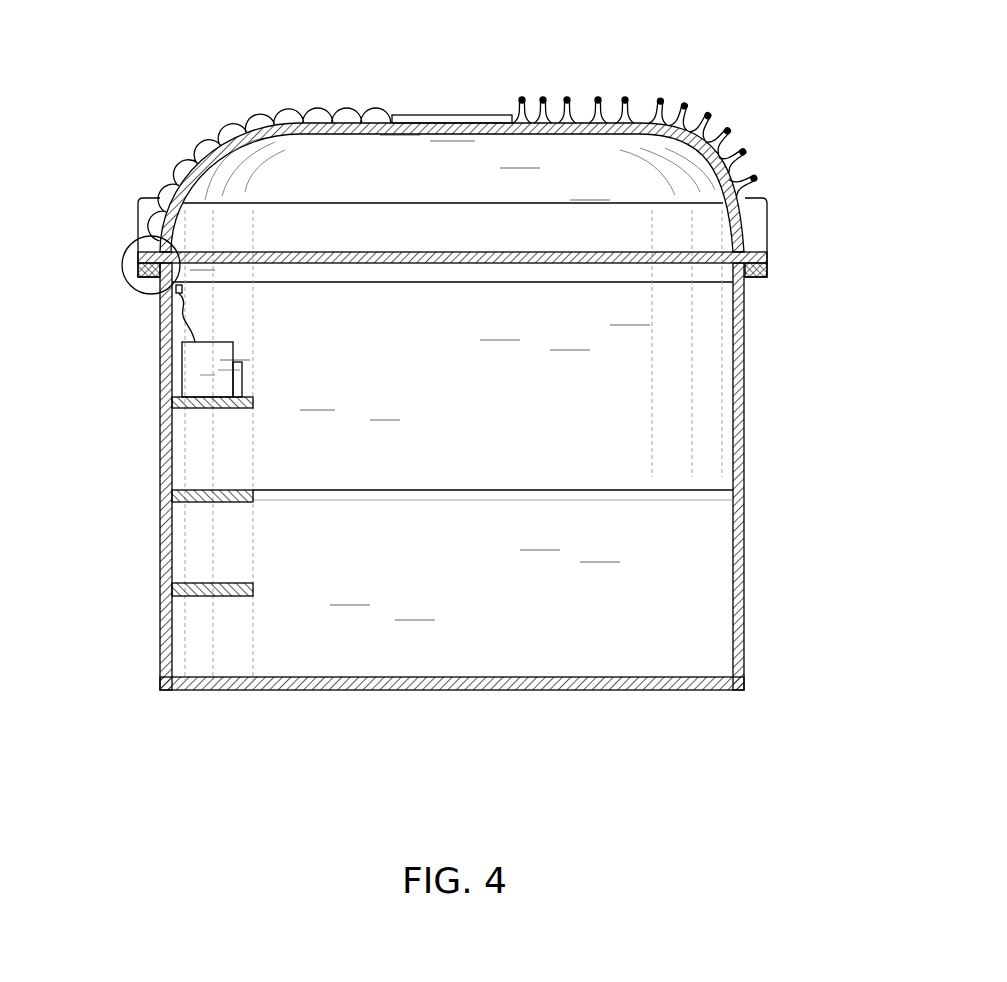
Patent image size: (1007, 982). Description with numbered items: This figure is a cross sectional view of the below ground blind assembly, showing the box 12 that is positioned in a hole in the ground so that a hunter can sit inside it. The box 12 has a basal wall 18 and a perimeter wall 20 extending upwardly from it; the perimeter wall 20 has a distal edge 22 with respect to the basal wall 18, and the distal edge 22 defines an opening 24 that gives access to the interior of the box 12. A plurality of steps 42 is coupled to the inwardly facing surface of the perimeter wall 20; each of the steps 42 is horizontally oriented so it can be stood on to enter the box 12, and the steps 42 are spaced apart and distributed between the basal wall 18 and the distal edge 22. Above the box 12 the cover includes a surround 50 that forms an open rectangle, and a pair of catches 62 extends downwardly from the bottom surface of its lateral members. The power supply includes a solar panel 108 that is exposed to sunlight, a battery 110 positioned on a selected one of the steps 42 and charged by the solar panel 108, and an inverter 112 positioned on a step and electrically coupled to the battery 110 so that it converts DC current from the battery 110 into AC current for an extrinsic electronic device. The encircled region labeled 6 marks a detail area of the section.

The detail view circle 6 is at (130, 243).
The box 12 is at (501, 519).
The basal wall 18 is at (613, 690).
The perimeter wall 20 is at (745, 596).
The distal edge 22 is at (733, 267).
The opening 24 is at (456, 338).
The steps 42 is at (200, 583).
The surround 50 is at (713, 252).
The catches 62 is at (138, 272).
The solar panel 108 is at (440, 115).
The battery 110 is at (183, 355).
The inverter 112 is at (243, 372).